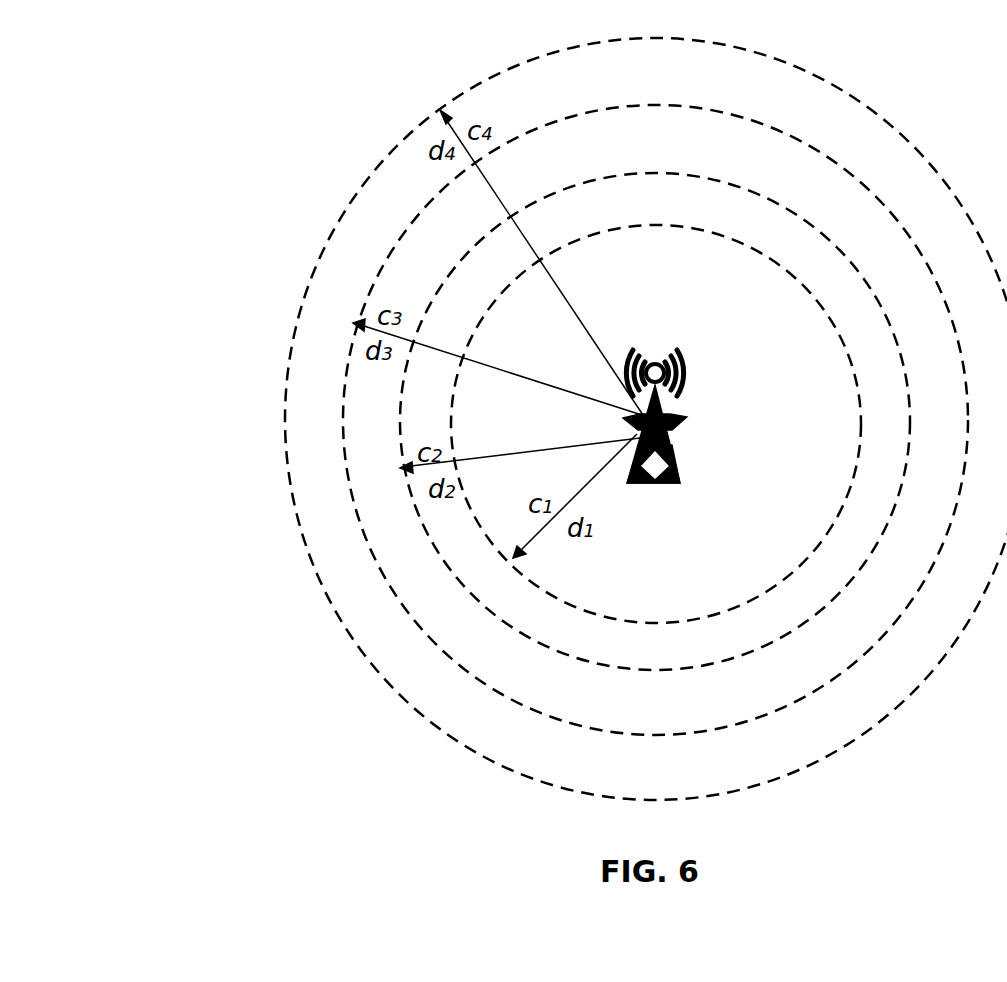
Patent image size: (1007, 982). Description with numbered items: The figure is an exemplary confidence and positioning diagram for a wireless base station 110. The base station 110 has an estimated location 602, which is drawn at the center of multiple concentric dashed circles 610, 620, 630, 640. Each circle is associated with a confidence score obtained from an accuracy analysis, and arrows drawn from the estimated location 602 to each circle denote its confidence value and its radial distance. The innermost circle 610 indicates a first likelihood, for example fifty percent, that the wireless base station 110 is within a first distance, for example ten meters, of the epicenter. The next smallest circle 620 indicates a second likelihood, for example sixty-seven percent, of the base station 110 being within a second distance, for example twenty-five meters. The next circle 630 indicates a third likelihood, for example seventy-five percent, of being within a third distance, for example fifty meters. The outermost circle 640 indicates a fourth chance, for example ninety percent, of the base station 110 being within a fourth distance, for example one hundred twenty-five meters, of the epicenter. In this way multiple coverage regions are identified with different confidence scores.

The wireless base station 110 is at (710, 372).
The estimated location 602 is at (669, 438).
The innermost circle 610 is at (500, 567).
The next smallest circle 620 is at (400, 469).
The next circle 630 is at (353, 323).
The outermost circle 640 is at (435, 111).